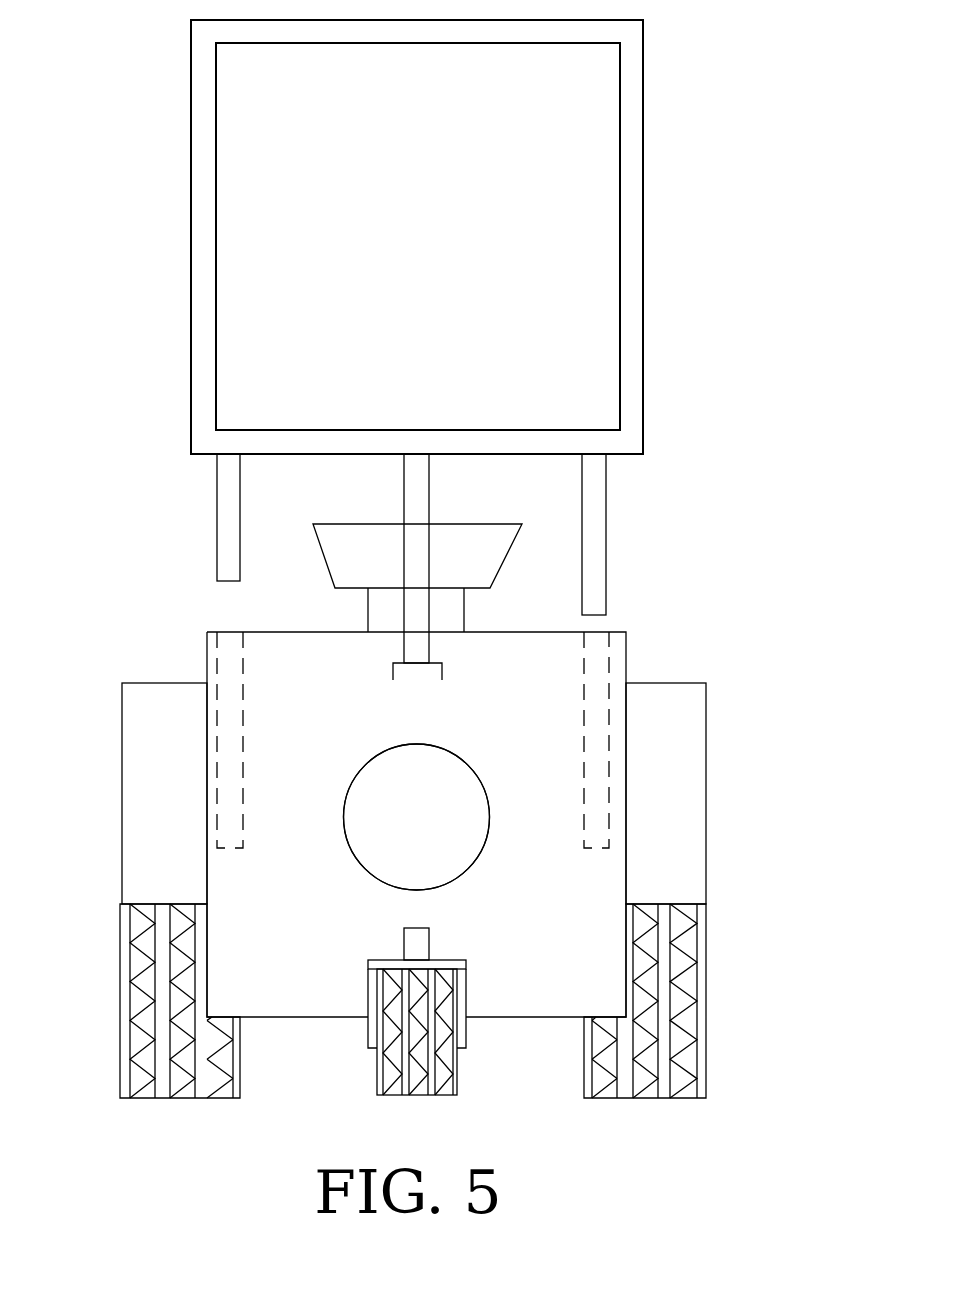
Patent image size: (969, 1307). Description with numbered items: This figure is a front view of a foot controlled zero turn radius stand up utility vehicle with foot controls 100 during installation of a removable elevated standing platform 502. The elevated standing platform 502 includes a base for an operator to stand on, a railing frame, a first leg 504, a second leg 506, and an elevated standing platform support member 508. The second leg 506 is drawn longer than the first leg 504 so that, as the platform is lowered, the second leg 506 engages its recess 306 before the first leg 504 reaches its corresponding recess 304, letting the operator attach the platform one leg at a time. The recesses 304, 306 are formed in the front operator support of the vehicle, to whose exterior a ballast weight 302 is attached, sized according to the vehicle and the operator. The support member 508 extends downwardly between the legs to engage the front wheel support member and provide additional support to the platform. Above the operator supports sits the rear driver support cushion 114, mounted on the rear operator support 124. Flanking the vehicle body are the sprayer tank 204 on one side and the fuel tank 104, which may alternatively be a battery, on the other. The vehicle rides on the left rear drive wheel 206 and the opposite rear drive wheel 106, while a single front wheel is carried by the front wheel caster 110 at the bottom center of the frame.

The stand up zero turn utility vehicle with foot controls 100 is at (112, 385).
The elevated standing platform 502 is at (450, 237).
The first leg 504 is at (190, 517).
The second leg 506 is at (627, 534).
The elevated standing platform support member 508 is at (451, 567).
The rear driver support cushion 114 is at (408, 524).
The rear operator support 124 is at (462, 596).
The recess 304 is at (263, 740).
The recess 306 is at (565, 740).
The ballast weight 302 is at (377, 832).
The sprayer tank 204 is at (133, 769).
The fuel tank 104 is at (698, 768).
The left rear drive wheel 206 is at (149, 991).
The left side rear drive wheel 106 is at (676, 999).
The front wheel caster 110 is at (438, 989).